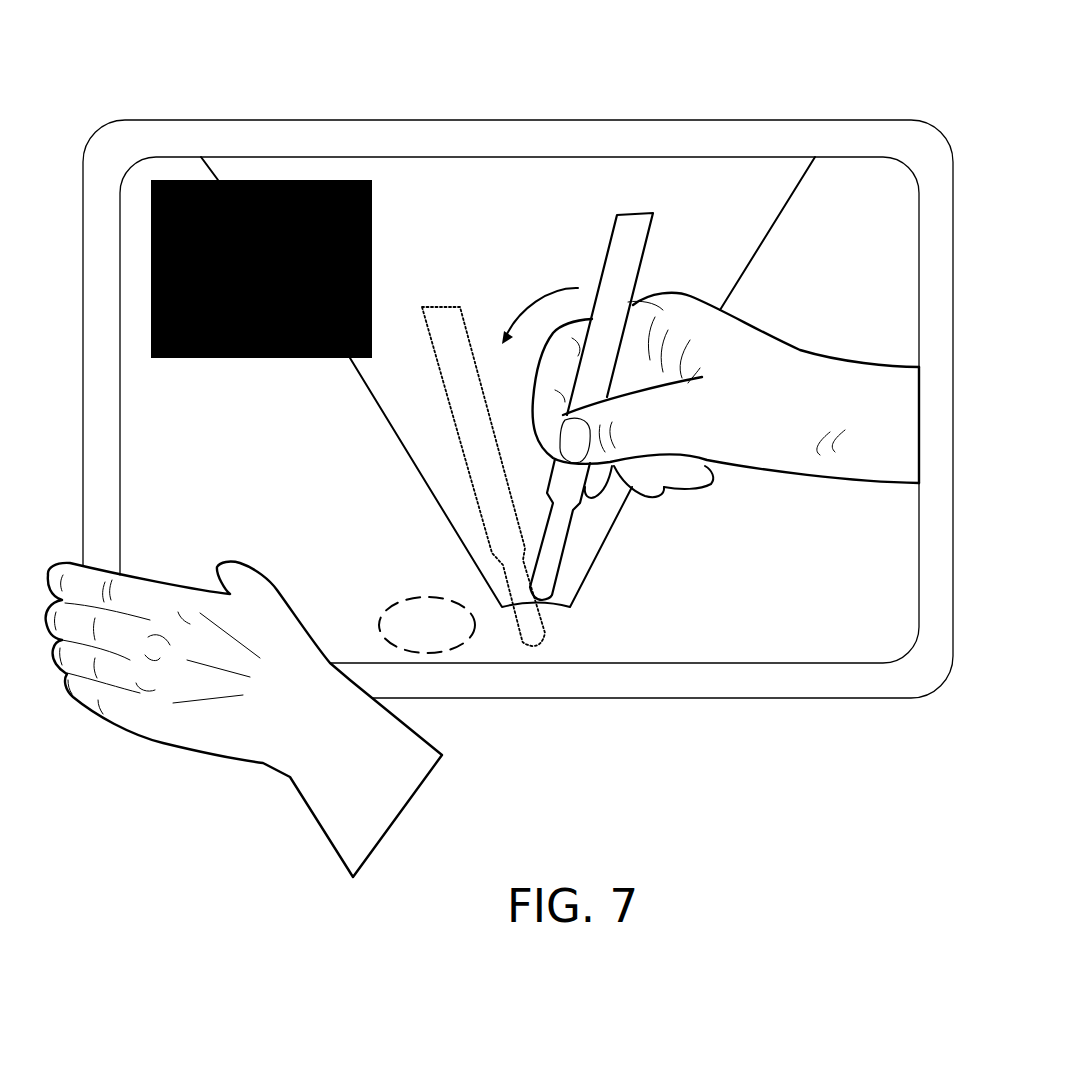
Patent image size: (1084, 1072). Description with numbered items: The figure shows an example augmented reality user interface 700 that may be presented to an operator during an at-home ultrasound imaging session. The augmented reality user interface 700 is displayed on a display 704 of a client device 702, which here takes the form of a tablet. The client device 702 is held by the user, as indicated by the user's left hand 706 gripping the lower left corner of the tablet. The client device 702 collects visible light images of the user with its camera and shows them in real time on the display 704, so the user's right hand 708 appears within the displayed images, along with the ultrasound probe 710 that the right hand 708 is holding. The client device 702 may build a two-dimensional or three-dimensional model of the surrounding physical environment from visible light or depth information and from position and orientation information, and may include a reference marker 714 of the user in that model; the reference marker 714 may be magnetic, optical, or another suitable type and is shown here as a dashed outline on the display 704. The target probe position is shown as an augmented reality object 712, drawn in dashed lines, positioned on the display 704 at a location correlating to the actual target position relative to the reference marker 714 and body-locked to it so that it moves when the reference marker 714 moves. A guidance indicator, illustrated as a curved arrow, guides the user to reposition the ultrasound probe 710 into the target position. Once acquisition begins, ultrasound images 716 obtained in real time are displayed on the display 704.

The augmented reality user interface 700 is at (874, 48).
The client device 702 is at (691, 120).
The display 704 is at (786, 157).
The left hand 706 is at (409, 745).
The right hand 708 is at (794, 349).
The ultrasound probe 710 is at (633, 223).
The augmented reality object 712 is at (447, 314).
The reference marker 714 is at (445, 637).
The ultrasound images 716 is at (372, 235).